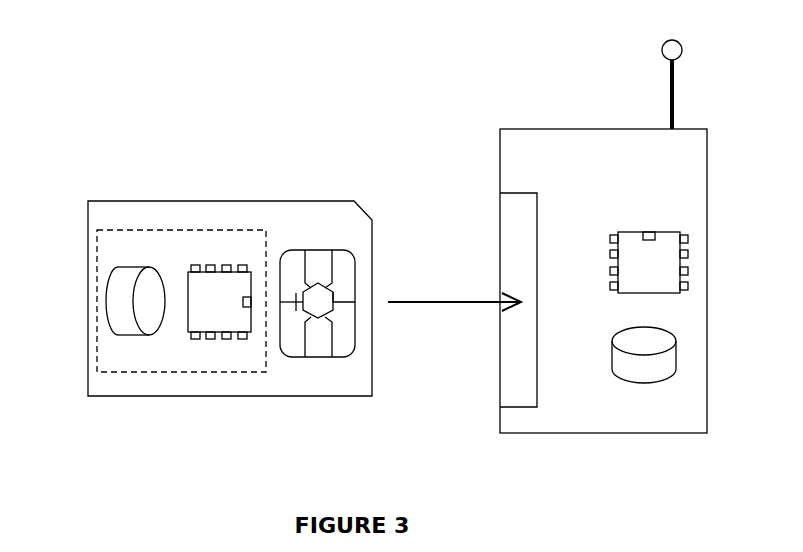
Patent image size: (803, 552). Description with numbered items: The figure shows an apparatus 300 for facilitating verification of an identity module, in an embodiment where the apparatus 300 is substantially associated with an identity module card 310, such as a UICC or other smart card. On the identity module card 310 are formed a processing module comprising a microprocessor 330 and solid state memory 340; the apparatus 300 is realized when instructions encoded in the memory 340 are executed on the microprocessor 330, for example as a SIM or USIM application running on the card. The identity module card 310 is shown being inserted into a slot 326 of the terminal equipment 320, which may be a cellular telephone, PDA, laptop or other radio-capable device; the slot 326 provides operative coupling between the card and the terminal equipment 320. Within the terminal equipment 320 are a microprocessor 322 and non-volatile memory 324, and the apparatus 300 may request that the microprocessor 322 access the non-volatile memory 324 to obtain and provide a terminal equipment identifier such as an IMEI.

The apparatus 300 is at (205, 229).
The identity module card 310 is at (145, 198).
The terminal equipment 320 is at (567, 128).
The microprocessor 322 is at (651, 250).
The non-volatile memory 324 is at (647, 366).
The slot 326 is at (512, 218).
The microprocessor 330 is at (209, 311).
The solid state memory 340 is at (117, 289).